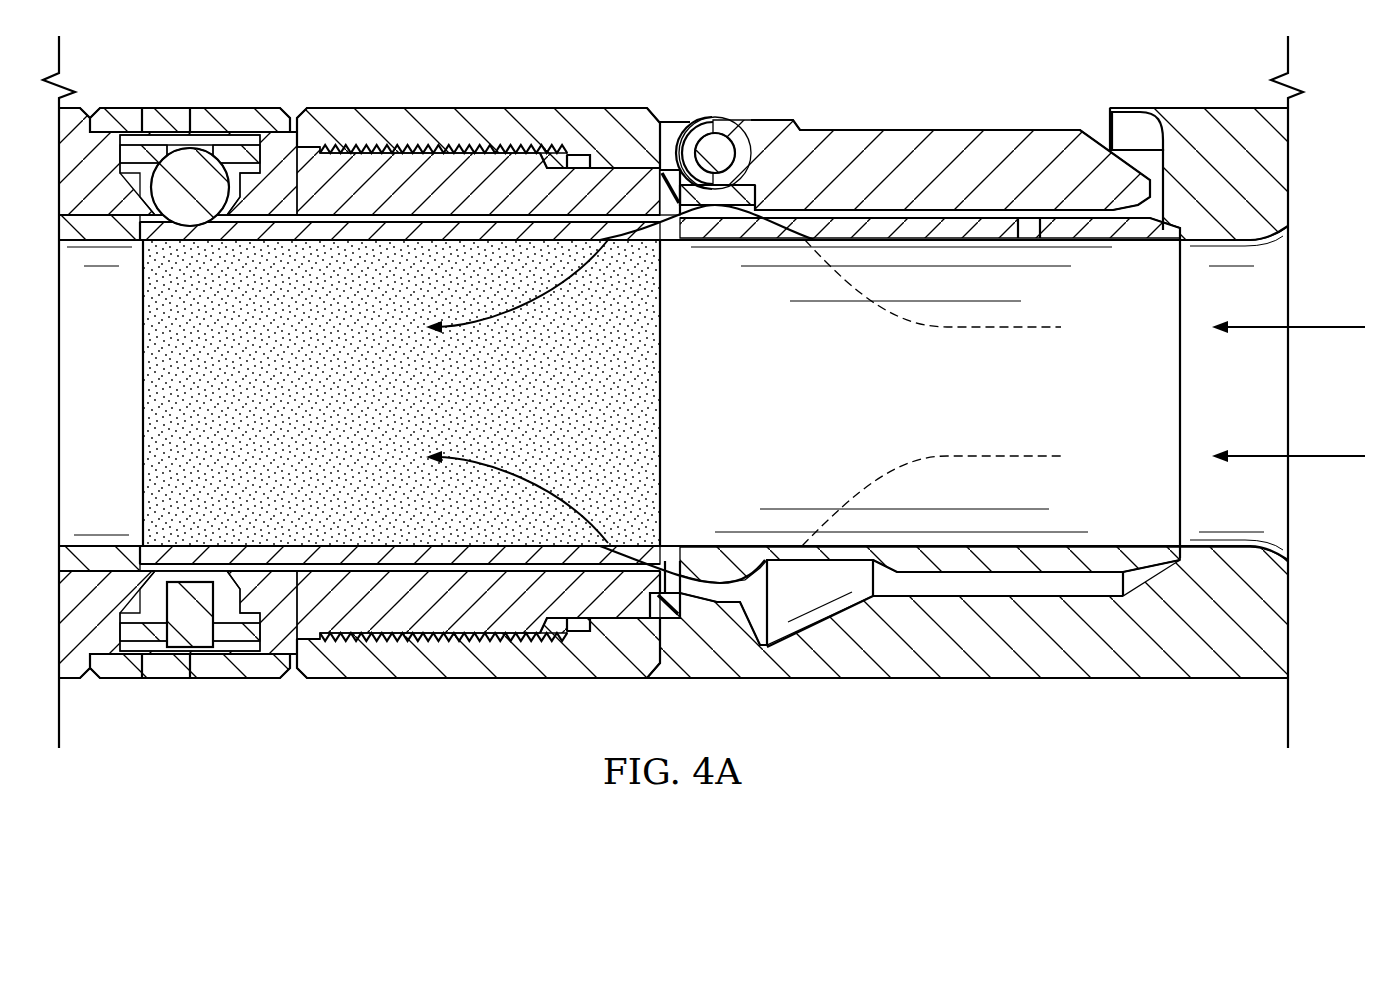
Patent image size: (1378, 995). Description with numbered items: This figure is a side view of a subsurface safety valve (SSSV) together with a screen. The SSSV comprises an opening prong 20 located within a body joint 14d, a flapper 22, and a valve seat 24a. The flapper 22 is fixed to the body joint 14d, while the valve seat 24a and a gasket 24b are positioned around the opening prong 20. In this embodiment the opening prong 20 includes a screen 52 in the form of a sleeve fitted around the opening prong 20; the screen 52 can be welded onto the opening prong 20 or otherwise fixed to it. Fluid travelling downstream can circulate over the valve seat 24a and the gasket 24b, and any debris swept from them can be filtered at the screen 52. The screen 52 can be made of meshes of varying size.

The body joint 14d is at (1078, 667).
The opening prong 20 is at (900, 407).
The flapper 22 is at (957, 140).
The valve seat 24a is at (615, 178).
The gasket 24b is at (665, 178).
The screen 52 is at (382, 409).